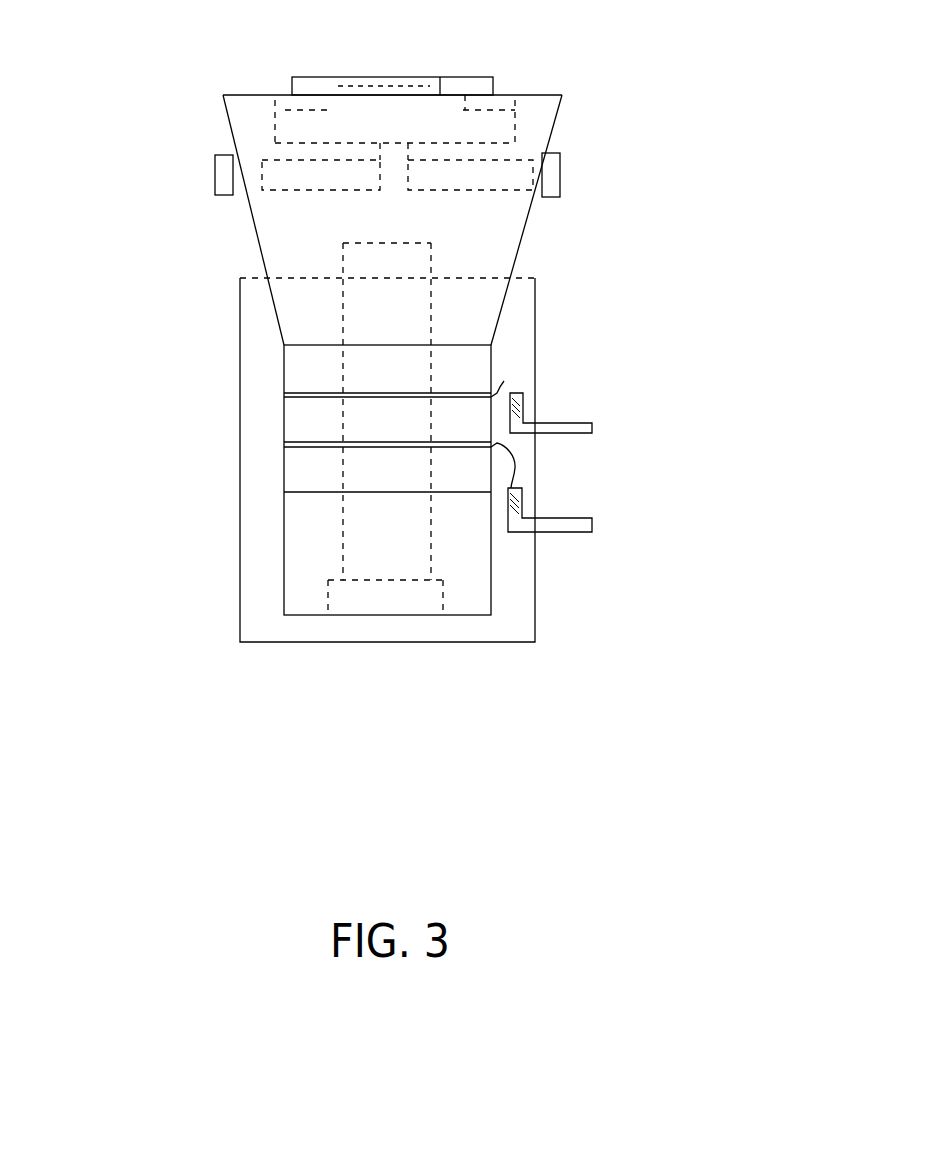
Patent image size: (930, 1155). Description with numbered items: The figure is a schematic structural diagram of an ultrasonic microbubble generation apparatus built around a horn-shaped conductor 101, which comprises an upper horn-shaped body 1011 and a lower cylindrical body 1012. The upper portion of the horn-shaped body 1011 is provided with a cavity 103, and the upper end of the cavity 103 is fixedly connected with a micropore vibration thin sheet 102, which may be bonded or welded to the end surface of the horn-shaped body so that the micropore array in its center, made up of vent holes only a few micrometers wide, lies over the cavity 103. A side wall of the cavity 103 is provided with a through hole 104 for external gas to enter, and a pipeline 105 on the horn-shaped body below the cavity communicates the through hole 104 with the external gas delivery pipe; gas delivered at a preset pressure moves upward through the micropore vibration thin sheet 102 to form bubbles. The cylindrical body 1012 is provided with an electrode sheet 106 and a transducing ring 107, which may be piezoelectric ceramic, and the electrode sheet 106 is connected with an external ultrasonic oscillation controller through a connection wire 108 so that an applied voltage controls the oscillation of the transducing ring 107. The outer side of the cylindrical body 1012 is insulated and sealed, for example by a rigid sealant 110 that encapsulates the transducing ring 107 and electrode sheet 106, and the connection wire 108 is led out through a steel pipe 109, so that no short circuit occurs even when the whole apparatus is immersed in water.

The horn-shaped conductor 101 is at (411, 220).
The horn-shaped body 1011 is at (299, 220).
The cylindrical body 1012 is at (265, 429).
The micropore vibration thin sheet 102 is at (432, 54).
The cavity 103 is at (337, 78).
The through hole 104 is at (283, 116).
The pipeline 105 is at (524, 124).
The electrode sheet 106 is at (285, 417).
The transducing ring 107 is at (285, 472).
The connection wire 108 is at (540, 425).
The steel pipe 109 is at (558, 530).
The rigid sealant 110 is at (331, 498).